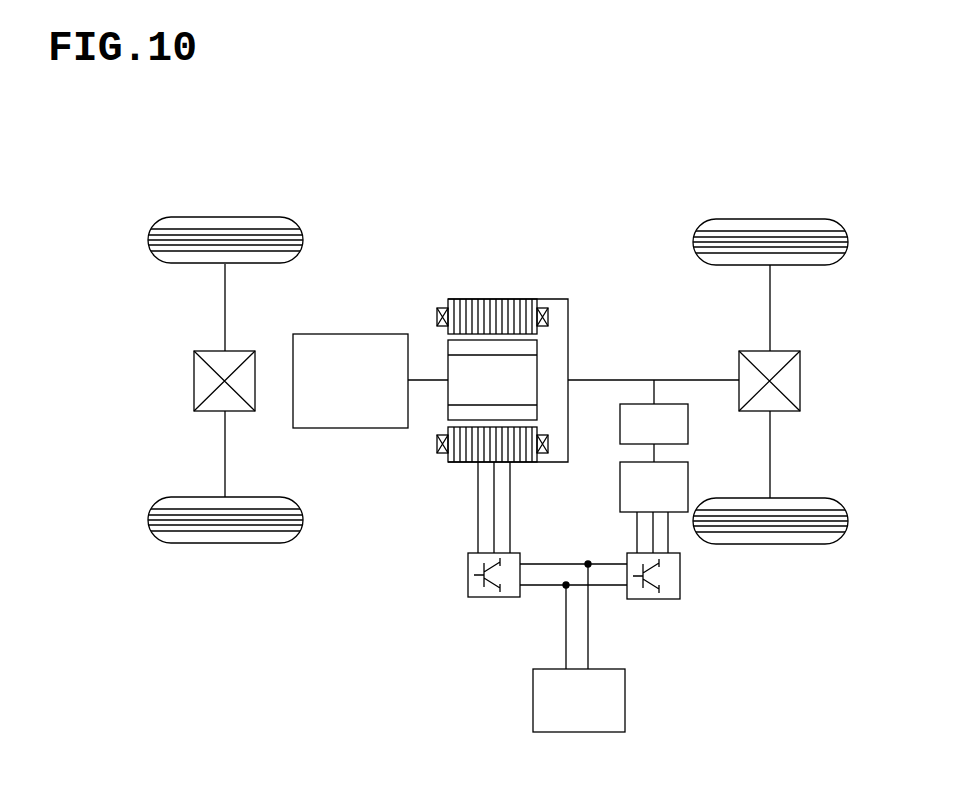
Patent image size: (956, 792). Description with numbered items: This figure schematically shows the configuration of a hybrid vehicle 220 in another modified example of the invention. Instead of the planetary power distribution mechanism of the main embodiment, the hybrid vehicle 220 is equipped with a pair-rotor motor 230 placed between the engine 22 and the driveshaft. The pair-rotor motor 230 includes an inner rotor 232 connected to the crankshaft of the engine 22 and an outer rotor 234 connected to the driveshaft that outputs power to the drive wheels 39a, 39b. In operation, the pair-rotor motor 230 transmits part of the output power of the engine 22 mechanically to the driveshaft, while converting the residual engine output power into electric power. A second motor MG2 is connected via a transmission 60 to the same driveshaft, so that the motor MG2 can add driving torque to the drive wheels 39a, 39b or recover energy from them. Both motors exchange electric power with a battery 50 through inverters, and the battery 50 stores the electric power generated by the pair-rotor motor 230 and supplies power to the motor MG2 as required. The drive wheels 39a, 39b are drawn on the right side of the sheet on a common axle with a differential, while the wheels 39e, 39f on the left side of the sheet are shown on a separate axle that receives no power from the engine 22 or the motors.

The hybrid vehicle 220 is at (597, 158).
The engine 22 is at (348, 428).
The pair-rotor motor 230 is at (437, 174).
The inner rotor 232 is at (448, 365).
The outer rotor 234 is at (495, 299).
The transmission 60 is at (638, 407).
The motor MG2 is at (619, 487).
The battery 50 is at (625, 694).
The drive wheel 39a is at (770, 219).
The drive wheel 39b is at (770, 544).
The wheel 39e is at (225, 217).
The wheel 39f is at (225, 543).